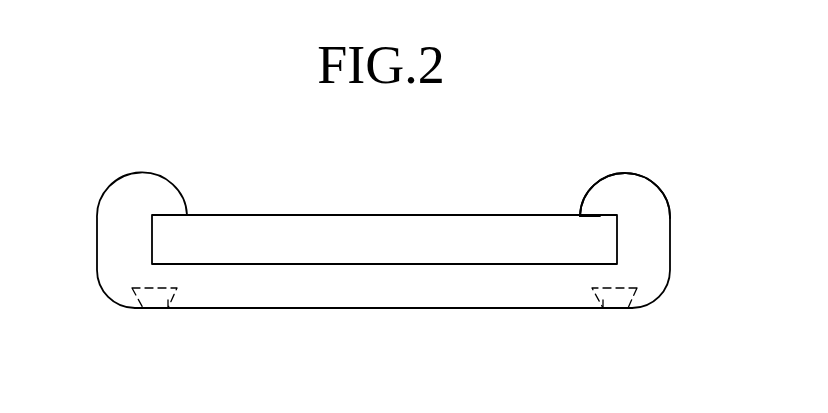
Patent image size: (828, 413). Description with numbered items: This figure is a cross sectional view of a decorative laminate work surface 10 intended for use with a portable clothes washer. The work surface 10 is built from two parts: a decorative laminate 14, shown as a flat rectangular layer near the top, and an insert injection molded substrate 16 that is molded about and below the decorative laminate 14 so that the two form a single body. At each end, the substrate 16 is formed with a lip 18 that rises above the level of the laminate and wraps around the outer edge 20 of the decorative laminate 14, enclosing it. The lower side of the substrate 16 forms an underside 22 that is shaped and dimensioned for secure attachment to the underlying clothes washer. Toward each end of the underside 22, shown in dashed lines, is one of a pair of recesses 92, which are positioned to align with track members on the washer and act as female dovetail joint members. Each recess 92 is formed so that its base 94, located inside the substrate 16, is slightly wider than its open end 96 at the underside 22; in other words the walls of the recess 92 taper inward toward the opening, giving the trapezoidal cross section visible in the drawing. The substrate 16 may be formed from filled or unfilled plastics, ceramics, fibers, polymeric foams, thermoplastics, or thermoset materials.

The decorative laminate work surface 10 is at (177, 107).
The decorative laminate 14 is at (275, 235).
The insert injection molded substrate 16 is at (403, 298).
The lip 18 is at (628, 177).
The outer edge 20 is at (583, 217).
The underside 22 is at (298, 308).
The recesses 92 is at (160, 309).
The base 94 is at (143, 287).
The open end 96 is at (173, 309).